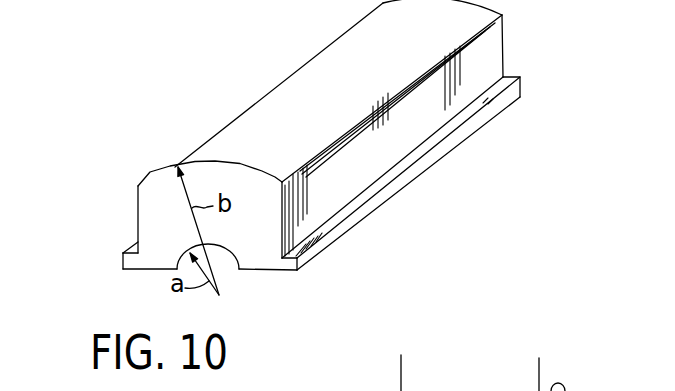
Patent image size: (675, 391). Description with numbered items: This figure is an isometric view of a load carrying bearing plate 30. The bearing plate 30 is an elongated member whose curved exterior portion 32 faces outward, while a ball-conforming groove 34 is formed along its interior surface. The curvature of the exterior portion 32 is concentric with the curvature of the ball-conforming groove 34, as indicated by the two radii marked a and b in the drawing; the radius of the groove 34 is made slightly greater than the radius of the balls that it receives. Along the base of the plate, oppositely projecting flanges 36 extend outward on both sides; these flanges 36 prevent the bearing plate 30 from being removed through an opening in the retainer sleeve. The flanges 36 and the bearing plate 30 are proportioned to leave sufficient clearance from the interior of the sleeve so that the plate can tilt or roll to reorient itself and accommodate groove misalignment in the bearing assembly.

The bearing plate 30 is at (495, 56).
The exterior portion 32 is at (311, 80).
The ball-conforming groove 34 is at (240, 270).
The flanges 36 is at (123, 260).